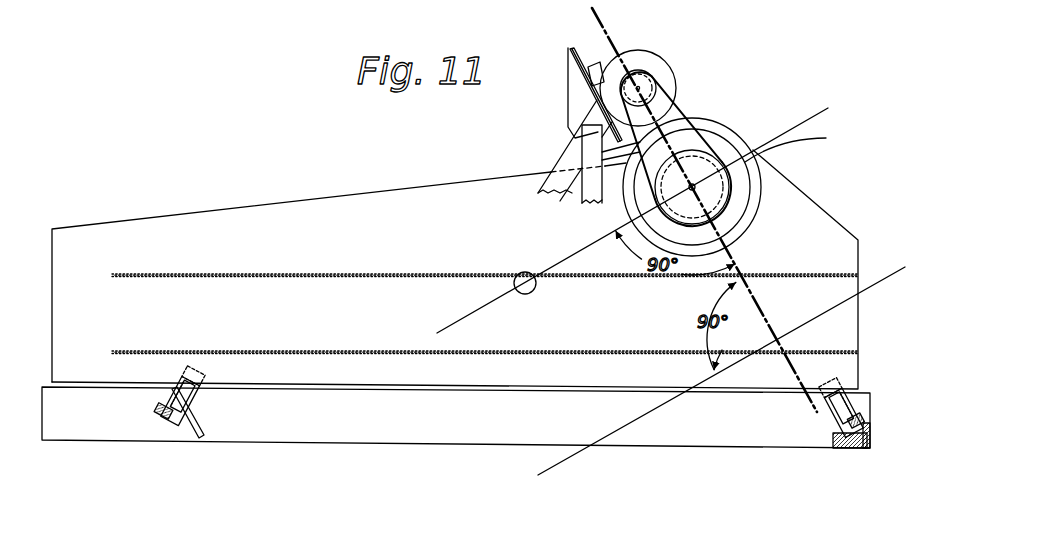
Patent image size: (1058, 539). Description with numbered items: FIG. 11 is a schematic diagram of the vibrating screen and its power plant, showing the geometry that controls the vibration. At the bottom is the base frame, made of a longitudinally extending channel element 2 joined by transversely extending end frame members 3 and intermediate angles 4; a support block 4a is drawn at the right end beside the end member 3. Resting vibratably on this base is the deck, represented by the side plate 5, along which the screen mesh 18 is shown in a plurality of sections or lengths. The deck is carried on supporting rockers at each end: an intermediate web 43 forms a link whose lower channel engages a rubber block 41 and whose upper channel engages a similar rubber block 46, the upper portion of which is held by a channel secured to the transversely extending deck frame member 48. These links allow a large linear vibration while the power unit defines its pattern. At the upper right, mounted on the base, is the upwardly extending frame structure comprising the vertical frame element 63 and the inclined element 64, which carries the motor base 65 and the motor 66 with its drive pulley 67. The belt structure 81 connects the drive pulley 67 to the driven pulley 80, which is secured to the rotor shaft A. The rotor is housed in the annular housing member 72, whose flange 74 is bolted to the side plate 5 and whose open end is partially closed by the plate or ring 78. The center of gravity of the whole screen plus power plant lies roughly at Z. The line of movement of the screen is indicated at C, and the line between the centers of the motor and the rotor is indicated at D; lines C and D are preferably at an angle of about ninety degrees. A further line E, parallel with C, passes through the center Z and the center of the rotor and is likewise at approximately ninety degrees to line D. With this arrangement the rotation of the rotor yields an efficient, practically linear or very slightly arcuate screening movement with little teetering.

The channel element 2 is at (420, 425).
The end frame member 3 is at (867, 448).
The intermediate angle 4 is at (205, 427).
The support block 4a is at (840, 442).
The side plate 5 is at (345, 213).
The screen mesh 18 is at (280, 272).
The rubber block 41 is at (183, 412).
The intermediate web 43 is at (163, 386).
The rubber block 46 is at (160, 384).
The deck frame member 48 is at (157, 374).
The vertical frame element 63 is at (580, 154).
The inclined element 64 is at (575, 143).
The motor base 65 is at (572, 62).
The motor 66 is at (640, 57).
The drive pulley 67 is at (647, 80).
The annular housing member 72 is at (724, 128).
The flange 74 is at (750, 177).
The plate or ring 78 is at (720, 153).
The driven pulley 80 is at (713, 193).
The belt structure 81 is at (682, 110).
The rotor shaft A is at (792, 145).
The line of movement C is at (657, 410).
The line between motor and rotor centers D is at (742, 267).
The line through center of gravity E is at (570, 257).
The center of gravity Z is at (520, 277).